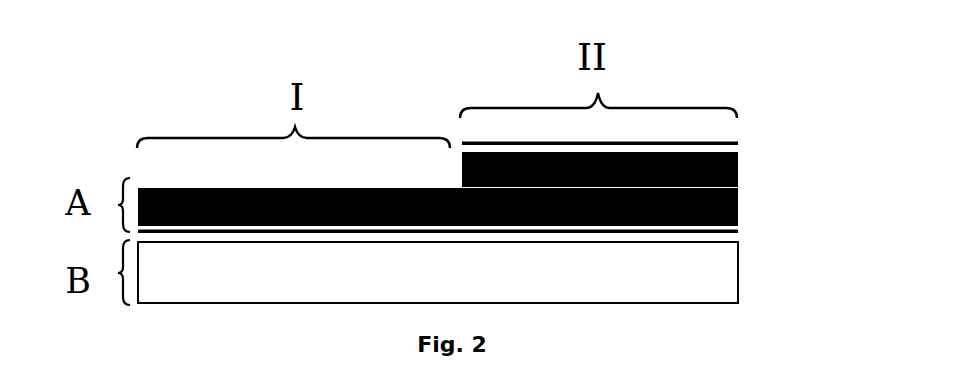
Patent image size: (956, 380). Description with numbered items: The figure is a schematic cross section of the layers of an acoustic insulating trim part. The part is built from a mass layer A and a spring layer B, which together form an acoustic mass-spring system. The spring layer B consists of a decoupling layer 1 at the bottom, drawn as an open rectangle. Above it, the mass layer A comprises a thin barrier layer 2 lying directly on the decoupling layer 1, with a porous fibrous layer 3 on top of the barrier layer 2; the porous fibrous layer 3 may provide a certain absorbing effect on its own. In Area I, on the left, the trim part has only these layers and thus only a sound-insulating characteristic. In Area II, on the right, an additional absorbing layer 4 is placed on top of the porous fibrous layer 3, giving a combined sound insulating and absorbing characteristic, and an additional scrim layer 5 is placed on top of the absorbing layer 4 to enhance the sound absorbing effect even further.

The decoupling layer 1 is at (715, 272).
The thin barrier layer 2 is at (738, 231).
The porous fibrous layer 3 is at (738, 207).
The absorbing layer 4 is at (738, 163).
The scrim layer 5 is at (727, 142).